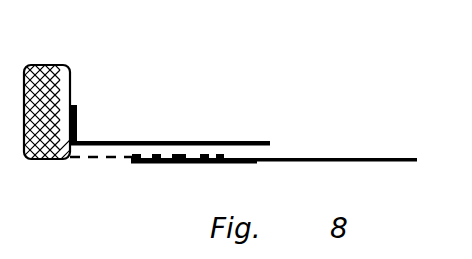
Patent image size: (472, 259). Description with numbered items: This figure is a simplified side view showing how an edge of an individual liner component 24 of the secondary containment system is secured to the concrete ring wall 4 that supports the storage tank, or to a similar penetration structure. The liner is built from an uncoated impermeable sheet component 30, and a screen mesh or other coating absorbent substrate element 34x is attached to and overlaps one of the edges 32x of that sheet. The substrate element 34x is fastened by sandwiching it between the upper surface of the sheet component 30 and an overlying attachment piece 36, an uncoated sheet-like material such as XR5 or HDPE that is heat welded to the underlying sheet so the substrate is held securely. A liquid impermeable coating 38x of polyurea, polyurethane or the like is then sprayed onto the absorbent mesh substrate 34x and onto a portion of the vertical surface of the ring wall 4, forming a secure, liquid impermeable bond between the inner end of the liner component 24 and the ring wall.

The concrete ring wall 4 is at (49, 65).
The liner component 24 is at (381, 158).
The uncoated impermeable sheet component 30 is at (305, 158).
The edge of sheet component 32x is at (134, 163).
The coating absorbent substrate element 34x is at (105, 160).
The attachment piece 36 is at (176, 155).
The liquid impermeable coating 38x is at (212, 141).